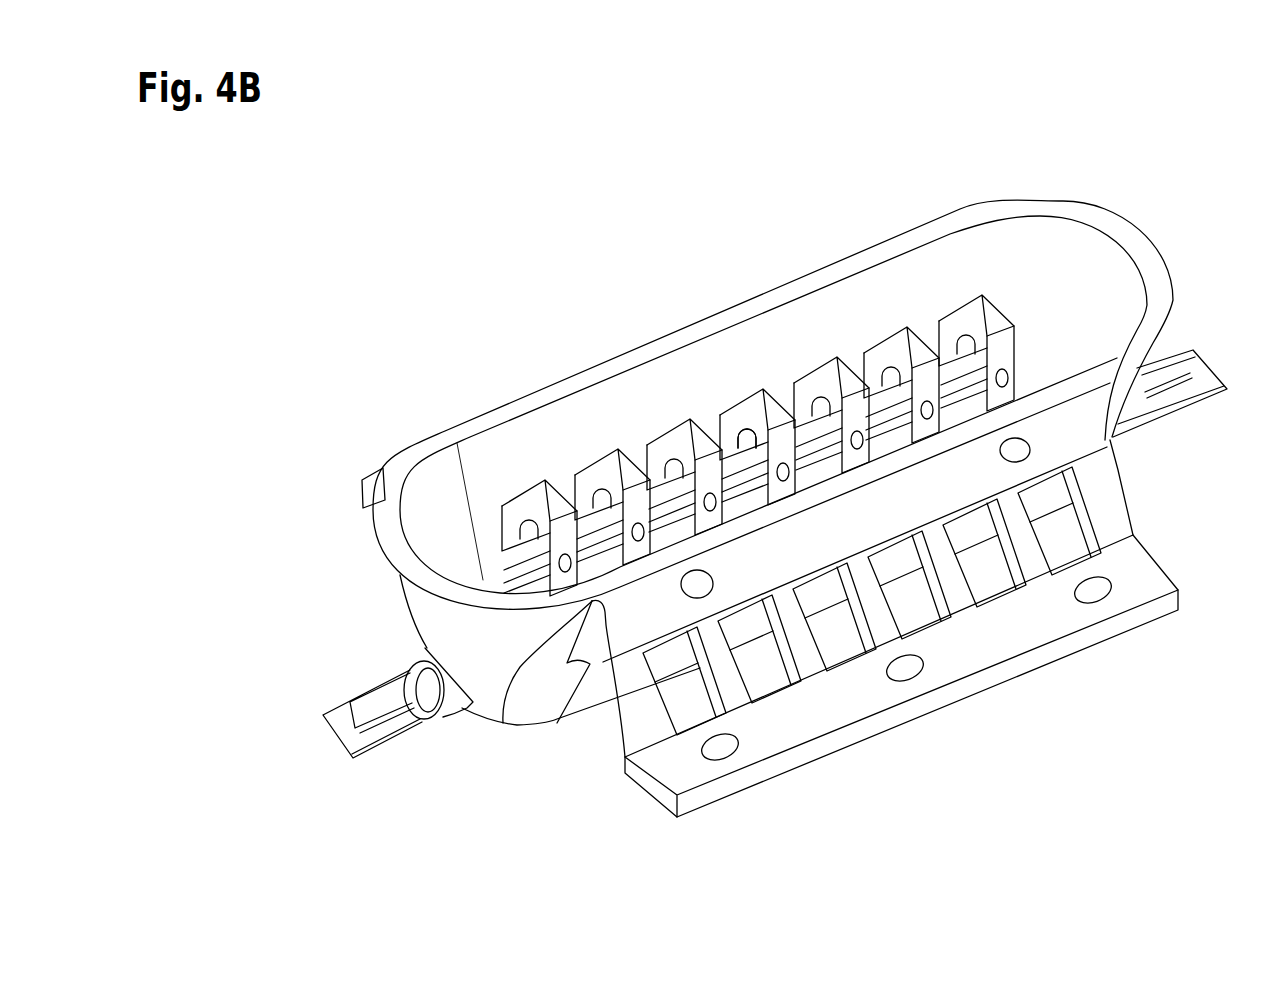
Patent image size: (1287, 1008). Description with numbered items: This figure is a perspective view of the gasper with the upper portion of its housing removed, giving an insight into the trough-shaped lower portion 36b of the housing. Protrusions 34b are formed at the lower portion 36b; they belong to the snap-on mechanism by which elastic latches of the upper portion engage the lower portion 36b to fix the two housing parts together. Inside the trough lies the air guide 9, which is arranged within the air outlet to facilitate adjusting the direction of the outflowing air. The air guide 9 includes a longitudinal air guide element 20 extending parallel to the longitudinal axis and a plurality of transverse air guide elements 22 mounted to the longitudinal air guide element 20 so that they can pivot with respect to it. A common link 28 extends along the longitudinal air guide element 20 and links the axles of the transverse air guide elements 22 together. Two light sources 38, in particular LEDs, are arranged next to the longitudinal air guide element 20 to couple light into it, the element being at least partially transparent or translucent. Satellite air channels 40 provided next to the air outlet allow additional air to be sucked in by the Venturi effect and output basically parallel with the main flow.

The air guide 9 is at (993, 291).
The longitudinal air guide element 20 is at (503, 724).
The transverse air guide elements 22 is at (535, 485).
The common link 28 is at (754, 415).
The protrusions 34b is at (1020, 448).
The lower portion 36b is at (1168, 232).
The light sources 38 is at (417, 727).
The satellite air channels 40 is at (677, 737).